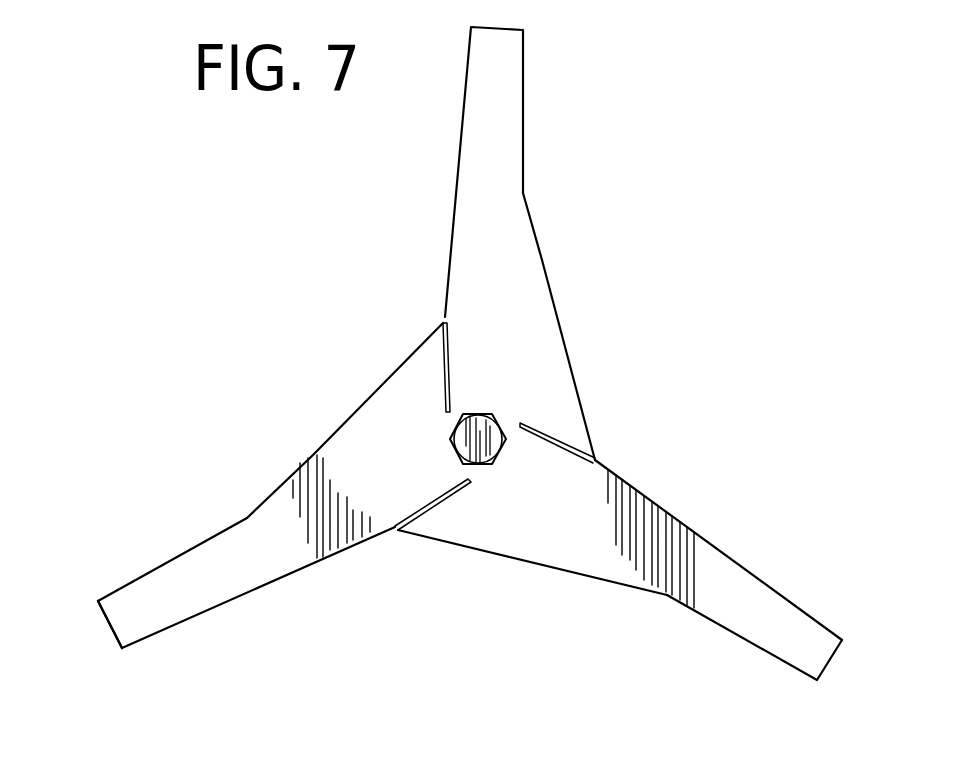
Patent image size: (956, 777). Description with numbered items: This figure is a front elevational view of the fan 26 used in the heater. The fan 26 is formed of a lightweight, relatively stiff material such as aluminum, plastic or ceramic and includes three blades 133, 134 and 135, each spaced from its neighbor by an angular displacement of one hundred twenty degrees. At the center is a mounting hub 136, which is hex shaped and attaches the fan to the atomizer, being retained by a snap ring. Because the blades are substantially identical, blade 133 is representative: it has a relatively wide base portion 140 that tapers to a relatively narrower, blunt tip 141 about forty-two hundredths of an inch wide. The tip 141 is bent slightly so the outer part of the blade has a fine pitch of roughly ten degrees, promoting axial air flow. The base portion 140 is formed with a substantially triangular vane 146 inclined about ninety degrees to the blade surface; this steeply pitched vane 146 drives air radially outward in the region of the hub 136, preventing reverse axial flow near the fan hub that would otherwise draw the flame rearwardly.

The fan 26 is at (575, 543).
The blade 133 is at (163, 615).
The blade 134 is at (473, 176).
The blade 135 is at (743, 625).
The central mounting hub 136 is at (490, 432).
The base portion 140 is at (392, 410).
The tip 141 is at (105, 627).
The vane 146 is at (431, 363).